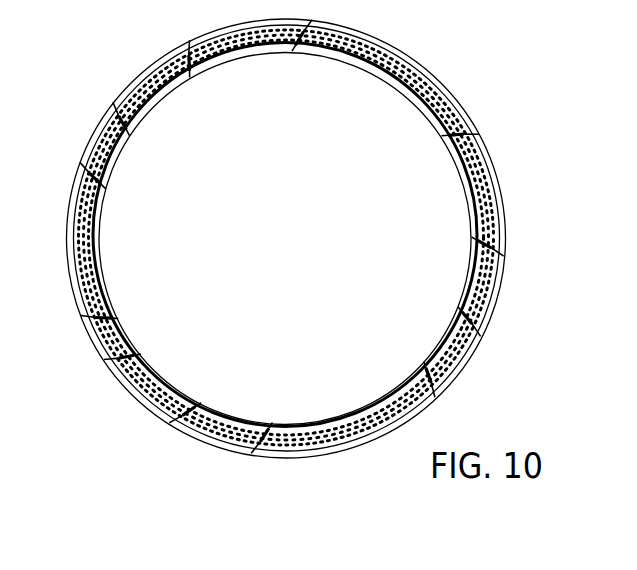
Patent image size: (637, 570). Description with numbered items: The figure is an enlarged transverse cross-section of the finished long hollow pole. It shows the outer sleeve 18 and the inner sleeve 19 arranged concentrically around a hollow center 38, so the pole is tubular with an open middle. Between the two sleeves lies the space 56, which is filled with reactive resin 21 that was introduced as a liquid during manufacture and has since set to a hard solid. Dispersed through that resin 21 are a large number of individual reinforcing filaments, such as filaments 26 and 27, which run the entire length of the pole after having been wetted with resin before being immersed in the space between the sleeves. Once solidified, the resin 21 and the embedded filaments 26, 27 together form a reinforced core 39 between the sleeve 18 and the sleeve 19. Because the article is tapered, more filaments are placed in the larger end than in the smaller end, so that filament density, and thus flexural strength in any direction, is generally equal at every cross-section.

The outer sleeve 18 is at (446, 40).
The inner sleeve 19 is at (387, 78).
The reactive resin 21 is at (211, 34).
The reinforcing filament 26 is at (473, 150).
The reinforcing filament 27 is at (492, 185).
The hollow center 38 is at (250, 192).
The reinforced core 39 is at (103, 127).
The space between sleeves 56 is at (146, 384).